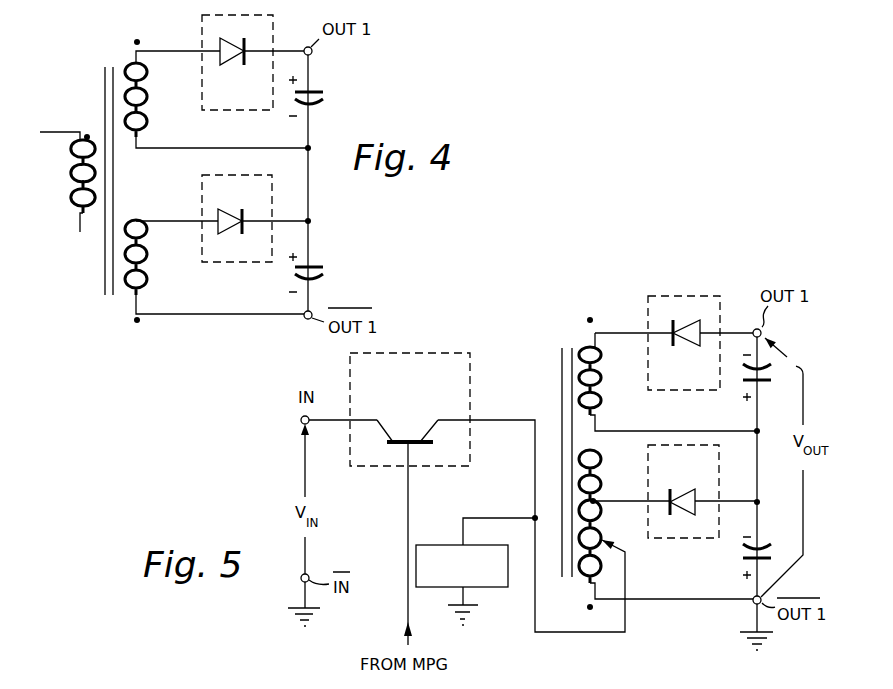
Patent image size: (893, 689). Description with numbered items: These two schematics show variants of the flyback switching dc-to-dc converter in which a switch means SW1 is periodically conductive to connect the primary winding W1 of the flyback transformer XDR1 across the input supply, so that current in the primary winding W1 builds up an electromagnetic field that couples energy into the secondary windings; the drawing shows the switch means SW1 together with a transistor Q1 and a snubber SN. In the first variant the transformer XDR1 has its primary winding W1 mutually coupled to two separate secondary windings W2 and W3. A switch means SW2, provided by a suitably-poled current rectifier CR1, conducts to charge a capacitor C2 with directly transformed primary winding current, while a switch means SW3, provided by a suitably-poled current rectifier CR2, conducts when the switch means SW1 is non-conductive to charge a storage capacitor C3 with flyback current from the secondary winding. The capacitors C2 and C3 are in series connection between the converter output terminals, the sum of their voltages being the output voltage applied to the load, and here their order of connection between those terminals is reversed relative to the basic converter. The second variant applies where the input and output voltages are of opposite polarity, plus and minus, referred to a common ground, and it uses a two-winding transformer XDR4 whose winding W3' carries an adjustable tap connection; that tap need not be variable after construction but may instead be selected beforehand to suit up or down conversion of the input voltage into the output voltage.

In FIG. 4, the flyback transformer XDR1 is at (118, 47).
In FIG. 4, the primary winding W1 is at (68, 185).
In FIG. 4, the secondary winding W2 is at (146, 93).
In FIG. 5, the secondary winding W2 is at (605, 401).
In FIG. 4, the secondary winding W3 is at (216, 271).
In FIG. 5, the secondary winding W3 is at (668, 477).
In FIG. 5, the winding W3' is at (666, 555).
In FIG. 4, the current rectifier CR1 is at (229, 65).
In FIG. 5, the current rectifier CR1 is at (684, 347).
In FIG. 4, the current rectifier CR2 is at (229, 208).
In FIG. 5, the current rectifier CR2 is at (683, 485).
In FIG. 5, the switch means SW1 is at (470, 353).
In FIG. 4, the switch means SW2 is at (227, 110).
In FIG. 5, the switch means SW2 is at (690, 297).
In FIG. 4, the switch means SW3 is at (222, 262).
In FIG. 5, the switch means SW3 is at (665, 538).
In FIG. 4, the capacitor C2 is at (321, 96).
In FIG. 5, the capacitor C2 is at (769, 378).
In FIG. 4, the storage capacitor C3 is at (321, 272).
In FIG. 5, the storage capacitor C3 is at (769, 558).
In FIG. 5, the two-winding transformer XDR4 is at (592, 315).
In FIG. 5, the transistor Q1 is at (407, 524).
In FIG. 5, the snubber SN is at (438, 545).